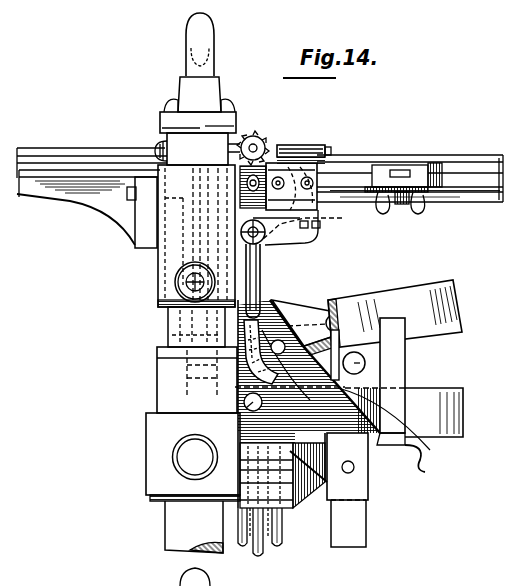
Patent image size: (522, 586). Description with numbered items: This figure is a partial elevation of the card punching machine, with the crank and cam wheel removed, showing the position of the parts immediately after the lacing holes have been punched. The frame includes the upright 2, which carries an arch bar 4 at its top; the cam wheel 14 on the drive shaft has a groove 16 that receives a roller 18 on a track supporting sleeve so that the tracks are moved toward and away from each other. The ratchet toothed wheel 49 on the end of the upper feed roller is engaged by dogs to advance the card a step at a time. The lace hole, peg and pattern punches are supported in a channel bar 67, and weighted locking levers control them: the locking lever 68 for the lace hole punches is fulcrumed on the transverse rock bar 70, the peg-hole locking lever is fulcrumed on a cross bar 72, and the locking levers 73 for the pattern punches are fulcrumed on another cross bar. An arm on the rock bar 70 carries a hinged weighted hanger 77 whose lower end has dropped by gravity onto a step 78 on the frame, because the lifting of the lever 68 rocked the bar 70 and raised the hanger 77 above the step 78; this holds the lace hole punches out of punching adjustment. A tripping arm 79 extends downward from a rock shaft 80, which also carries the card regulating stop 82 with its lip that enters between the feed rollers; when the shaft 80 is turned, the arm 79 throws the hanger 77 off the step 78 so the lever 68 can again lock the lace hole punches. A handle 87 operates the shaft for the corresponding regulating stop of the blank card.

The upright 2 is at (191, 149).
The arch bar 4 is at (204, 46).
The cam wheel 14 is at (247, 410).
The groove 16 is at (310, 318).
The roller 18 is at (188, 285).
The ratchet toothed wheel 49 is at (258, 138).
The channel bar 67 is at (285, 482).
The locking lever 68 is at (395, 314).
The transverse bar 70 is at (278, 340).
The cross bar 72 is at (237, 385).
The locking levers 73 is at (404, 412).
The weighted hanger 77 is at (362, 363).
The step 78 is at (430, 450).
The tripping arm 79 is at (302, 249).
The rock shaft 80 is at (302, 234).
The card regulating stop 82 is at (342, 218).
The handle 87 is at (264, 262).